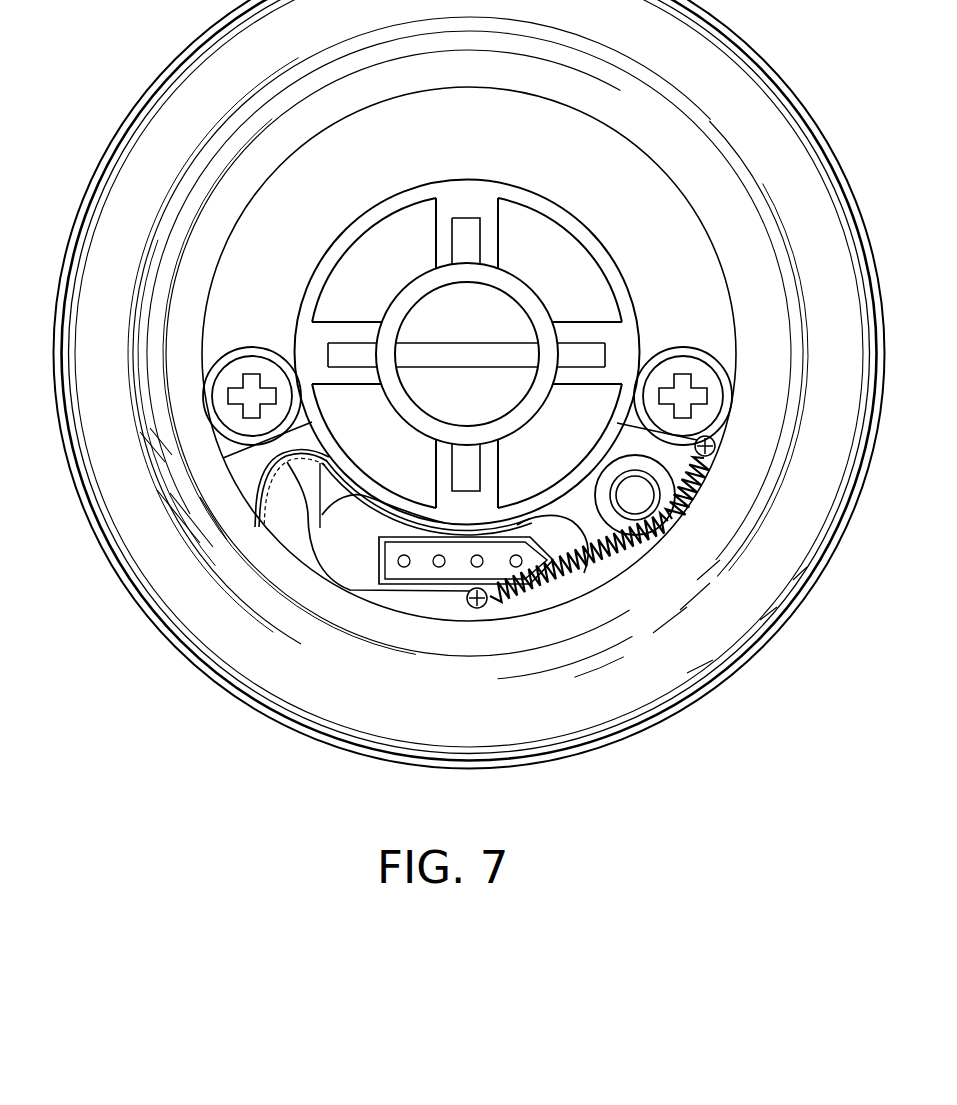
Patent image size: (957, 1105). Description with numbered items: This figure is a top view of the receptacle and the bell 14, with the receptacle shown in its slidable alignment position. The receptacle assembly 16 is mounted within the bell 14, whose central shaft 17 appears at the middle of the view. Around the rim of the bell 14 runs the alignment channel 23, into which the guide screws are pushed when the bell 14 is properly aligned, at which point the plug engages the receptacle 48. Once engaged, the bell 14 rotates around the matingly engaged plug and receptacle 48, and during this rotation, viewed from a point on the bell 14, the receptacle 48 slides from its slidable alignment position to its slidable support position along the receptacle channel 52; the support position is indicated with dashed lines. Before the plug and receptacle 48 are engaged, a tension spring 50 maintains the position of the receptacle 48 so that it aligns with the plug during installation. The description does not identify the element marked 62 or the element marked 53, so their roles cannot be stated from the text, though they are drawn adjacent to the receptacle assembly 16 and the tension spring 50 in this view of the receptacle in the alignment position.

The bell 14 is at (653, 46).
The shaft 17 is at (480, 327).
The channel 23 is at (66, 264).
The receptacle assembly 16 is at (229, 478).
The receptacle channel 52 is at (303, 505).
The lever 62 is at (348, 547).
The receptacle 48 is at (418, 562).
The spring 53 is at (638, 545).
The tension spring 50 is at (682, 538).